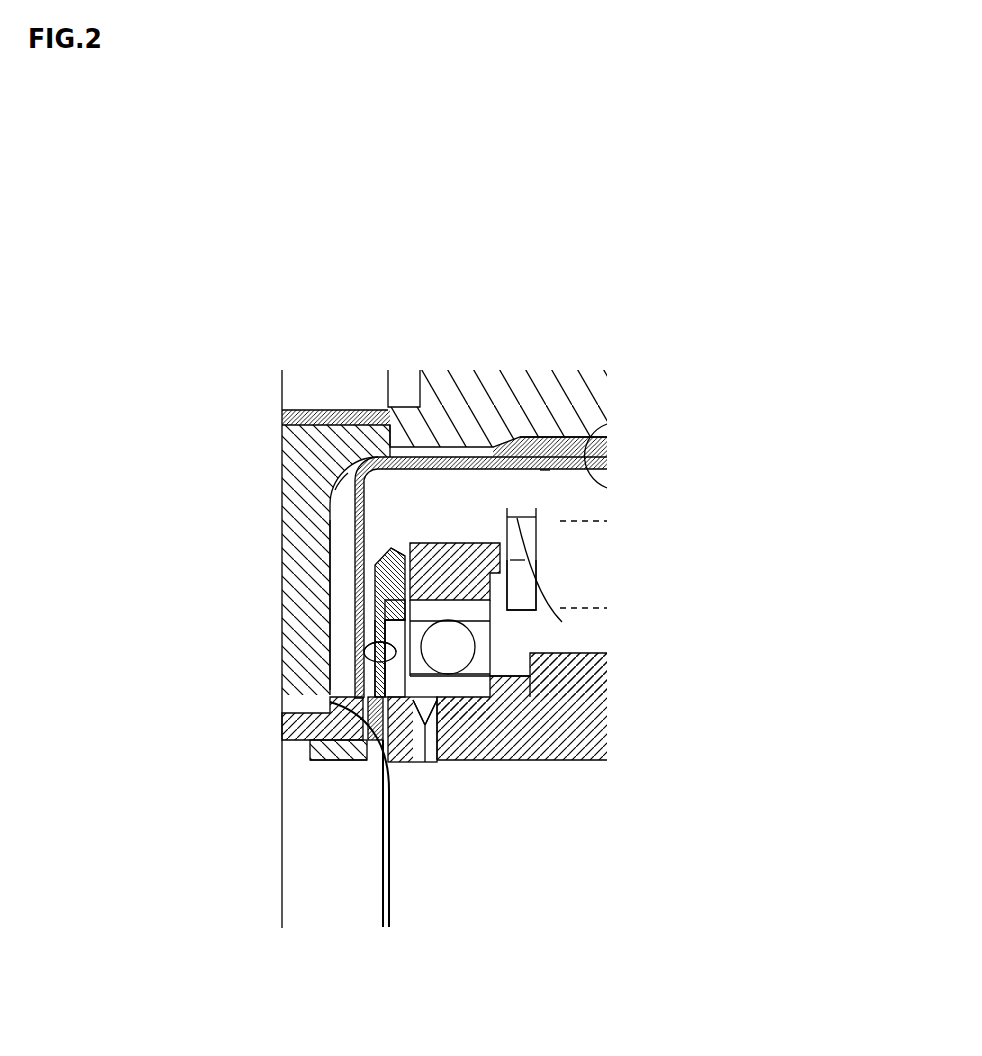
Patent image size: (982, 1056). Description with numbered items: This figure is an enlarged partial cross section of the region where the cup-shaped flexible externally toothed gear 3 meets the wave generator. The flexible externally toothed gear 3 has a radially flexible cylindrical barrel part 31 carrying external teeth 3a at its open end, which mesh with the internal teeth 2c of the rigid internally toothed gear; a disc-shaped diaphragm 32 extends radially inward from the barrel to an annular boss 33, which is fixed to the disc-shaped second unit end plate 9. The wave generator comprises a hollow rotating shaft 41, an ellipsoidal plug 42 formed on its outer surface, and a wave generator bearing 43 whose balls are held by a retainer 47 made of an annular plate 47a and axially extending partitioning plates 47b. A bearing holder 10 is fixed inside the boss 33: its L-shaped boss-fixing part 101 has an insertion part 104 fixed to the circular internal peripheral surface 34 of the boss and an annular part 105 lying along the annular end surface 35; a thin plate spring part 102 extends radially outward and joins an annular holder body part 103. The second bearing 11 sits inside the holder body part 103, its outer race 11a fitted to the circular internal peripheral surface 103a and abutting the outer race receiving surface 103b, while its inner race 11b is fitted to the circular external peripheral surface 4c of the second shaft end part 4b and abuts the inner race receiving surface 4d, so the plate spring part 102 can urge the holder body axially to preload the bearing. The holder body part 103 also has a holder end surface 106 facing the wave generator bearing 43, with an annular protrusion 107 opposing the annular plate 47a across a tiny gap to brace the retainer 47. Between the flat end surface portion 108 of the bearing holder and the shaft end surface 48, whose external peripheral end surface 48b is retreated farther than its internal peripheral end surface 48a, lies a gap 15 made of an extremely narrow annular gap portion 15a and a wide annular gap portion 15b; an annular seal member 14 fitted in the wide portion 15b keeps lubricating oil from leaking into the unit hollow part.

The flexible externally toothed gear 3 is at (507, 437).
The external teeth 3a is at (607, 426).
The internal teeth 2c is at (572, 503).
The second unit end plate 9 is at (288, 485).
The bearing holder 10 is at (347, 478).
The cylindrical barrel part 31 is at (450, 457).
The diaphragm 32 is at (303, 548).
The boss 33 is at (283, 737).
The circular internal peripheral surface 34 is at (315, 752).
The annular end surface 35 is at (377, 627).
The hollow rotating shaft 41 is at (543, 743).
The plug 42 is at (523, 662).
The wave generator bearing 43 is at (610, 535).
The retainer 47 is at (781, 509).
The annular plate 47a is at (500, 578).
The partitioning plates 47b is at (540, 600).
The second shaft end part 4b is at (455, 750).
The circular external peripheral surface 4c is at (453, 732).
The inner race receiving surface 4d is at (490, 682).
The second bearing 11 is at (713, 600).
The outer race 11a is at (470, 622).
The inner race 11b is at (483, 680).
The seal member 14 is at (440, 747).
The gap 15 is at (503, 890).
The annular gap portion 15a is at (392, 745).
The annular gap portion 15b is at (412, 760).
The shaft end surface 48 is at (190, 680).
The internal peripheral end surface 48a is at (330, 702).
The external peripheral end surface 48b is at (364, 645).
The boss-fixing part 101 is at (327, 860).
The plate spring part 102 is at (375, 565).
The holder body part 103 is at (428, 606).
The circular internal peripheral surface 103a is at (392, 553).
The outer race receiving surface 103b is at (320, 492).
The insertion part 104 is at (337, 762).
The annular part 105 is at (373, 762).
The holder end surface 106 is at (524, 540).
The annular protrusion 107 is at (517, 570).
The end surface portion 108 is at (383, 605).